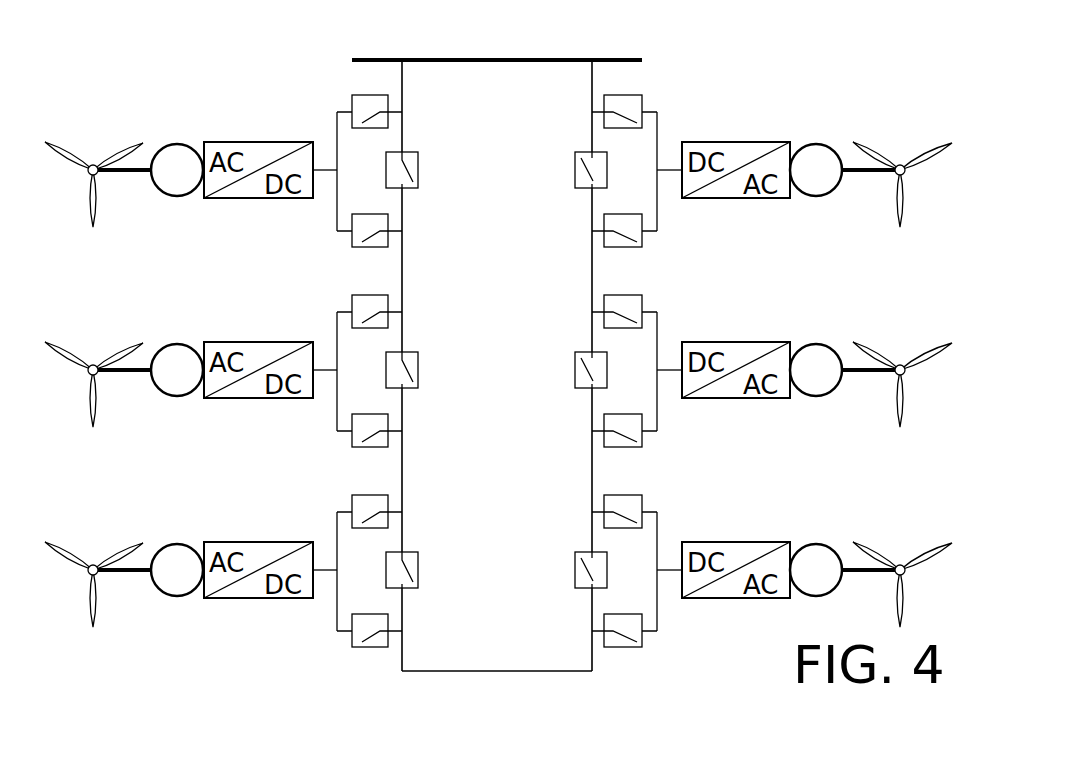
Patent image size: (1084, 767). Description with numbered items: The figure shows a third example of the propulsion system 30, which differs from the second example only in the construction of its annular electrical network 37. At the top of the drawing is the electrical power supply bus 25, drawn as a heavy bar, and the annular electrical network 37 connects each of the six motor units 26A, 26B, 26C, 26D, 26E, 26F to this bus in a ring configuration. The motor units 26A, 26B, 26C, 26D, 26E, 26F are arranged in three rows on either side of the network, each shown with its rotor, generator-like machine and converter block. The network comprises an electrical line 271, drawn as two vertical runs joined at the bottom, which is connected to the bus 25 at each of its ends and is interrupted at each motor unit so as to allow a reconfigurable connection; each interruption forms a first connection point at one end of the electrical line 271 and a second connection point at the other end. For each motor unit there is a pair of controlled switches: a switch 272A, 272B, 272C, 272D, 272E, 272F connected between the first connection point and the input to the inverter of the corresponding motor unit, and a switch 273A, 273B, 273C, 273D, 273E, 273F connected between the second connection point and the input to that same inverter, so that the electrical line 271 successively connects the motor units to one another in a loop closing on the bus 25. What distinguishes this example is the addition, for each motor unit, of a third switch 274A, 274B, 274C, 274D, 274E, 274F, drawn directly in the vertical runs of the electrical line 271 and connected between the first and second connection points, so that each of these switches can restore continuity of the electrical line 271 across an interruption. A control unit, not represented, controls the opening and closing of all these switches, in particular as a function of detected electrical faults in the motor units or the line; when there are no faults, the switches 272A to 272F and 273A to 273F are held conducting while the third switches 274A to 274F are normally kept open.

The electrical power supply bus 25 is at (494, 64).
The motor unit 26A is at (907, 141).
The motor unit 26B is at (874, 356).
The motor unit 26C is at (874, 556).
The motor unit 26D is at (124, 557).
The motor unit 26E is at (124, 357).
The motor unit 26F is at (97, 141).
The propulsion system 30 is at (848, 68).
The annular electrical network 37 is at (654, 77).
The electrical line 271 is at (412, 672).
The controlled switch 272A is at (642, 100).
The controlled switch 272B is at (684, 306).
The controlled switch 272C is at (684, 506).
The controlled switch 272D is at (312, 628).
The controlled switch 272E is at (312, 428).
The controlled switch 272F is at (352, 243).
The controlled switch 273A is at (642, 243).
The controlled switch 273B is at (684, 427).
The controlled switch 273C is at (684, 627).
The controlled switch 273D is at (312, 505).
The controlled switch 273E is at (312, 305).
The controlled switch 273F is at (352, 100).
The third switch 274A is at (575, 158).
The third switch 274B is at (536, 366).
The third switch 274C is at (536, 566).
The third switch 274D is at (455, 580).
The third switch 274E is at (453, 380).
The third switch 274F is at (418, 180).